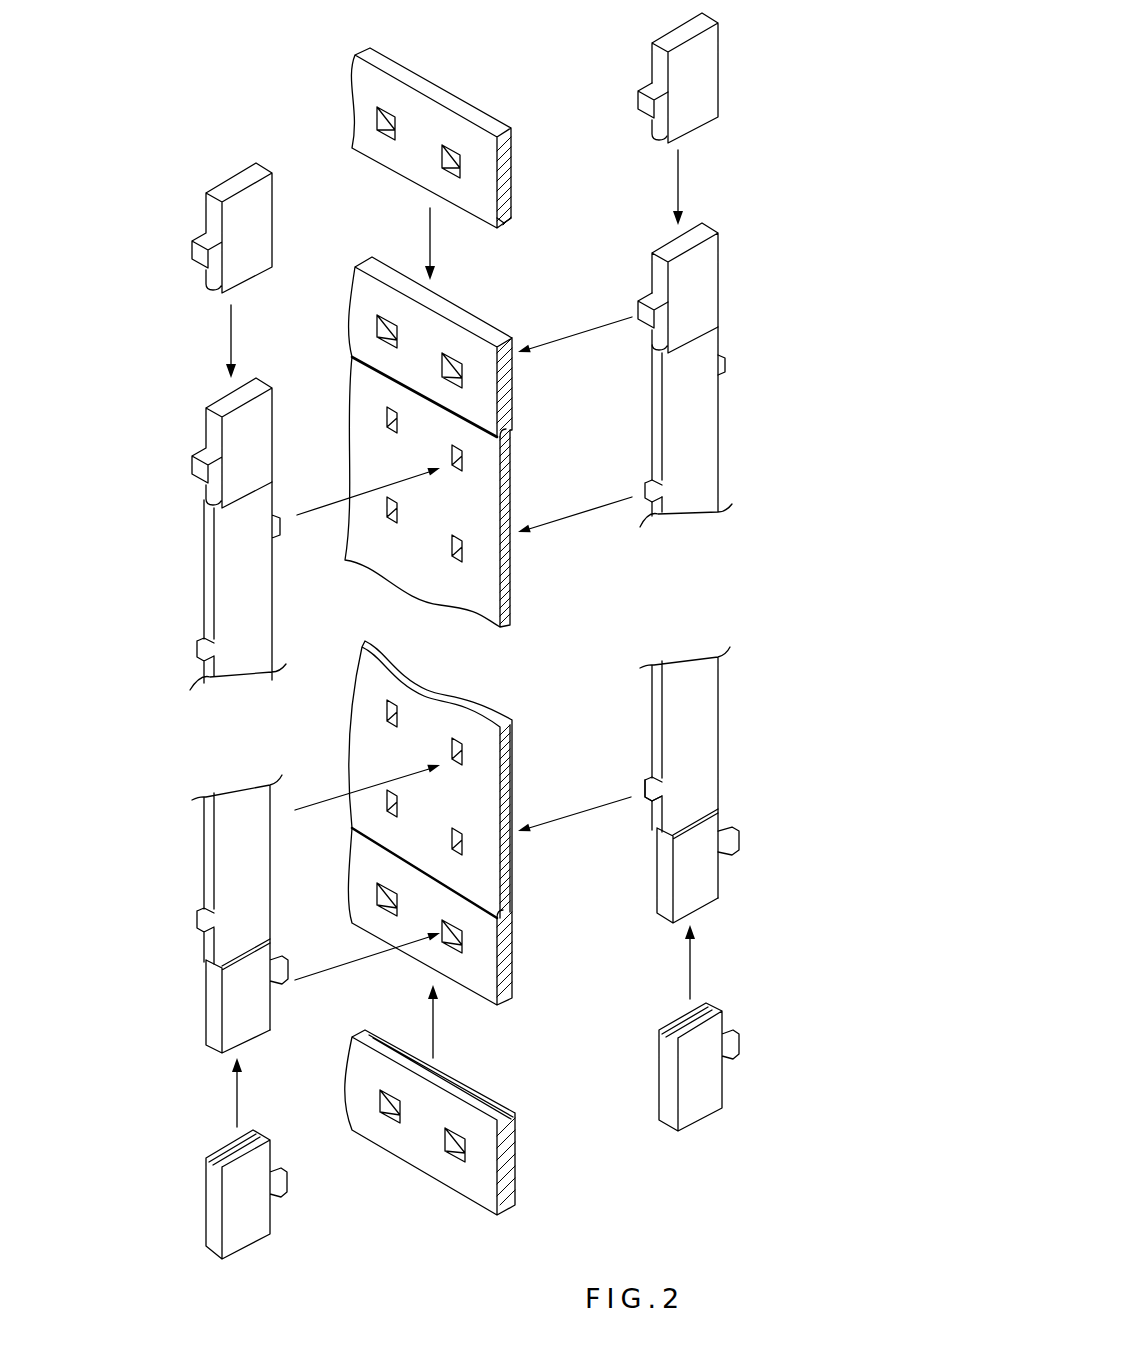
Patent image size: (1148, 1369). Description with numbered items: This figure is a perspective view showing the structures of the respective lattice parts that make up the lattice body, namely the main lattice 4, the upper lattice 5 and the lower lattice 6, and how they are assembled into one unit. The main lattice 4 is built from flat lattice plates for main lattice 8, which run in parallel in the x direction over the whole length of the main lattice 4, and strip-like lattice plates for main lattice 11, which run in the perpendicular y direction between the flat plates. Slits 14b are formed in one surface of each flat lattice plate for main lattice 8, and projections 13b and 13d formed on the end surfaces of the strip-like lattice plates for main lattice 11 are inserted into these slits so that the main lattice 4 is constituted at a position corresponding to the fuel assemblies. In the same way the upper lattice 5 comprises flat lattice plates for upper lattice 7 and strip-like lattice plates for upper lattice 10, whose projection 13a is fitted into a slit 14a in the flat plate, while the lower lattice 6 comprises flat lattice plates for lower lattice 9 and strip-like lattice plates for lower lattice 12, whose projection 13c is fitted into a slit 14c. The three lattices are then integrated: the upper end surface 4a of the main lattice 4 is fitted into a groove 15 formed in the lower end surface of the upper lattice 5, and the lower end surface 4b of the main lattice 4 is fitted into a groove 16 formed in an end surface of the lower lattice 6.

The main lattice 4 is at (656, 570).
The upper end surface of the main lattice 4a is at (657, 332).
The lower end surface of the main lattice 4b is at (660, 832).
The upper lattice 5 is at (653, 570).
The lower lattice 6 is at (673, 858).
The flat lattice plate for upper lattice 7 is at (444, 118).
The flat lattice plate for main lattice 8 is at (463, 631).
The flat lattice plate for lower lattice 9 is at (476, 1095).
The strip-like lattice plate for upper lattice 10 is at (669, 90).
The strip-like lattice plate for main lattice 11 is at (702, 612).
The strip-like lattice plate for lower lattice 12 is at (695, 1110).
The projection 13a is at (640, 105).
The projection 13b is at (650, 478).
The projection 13c is at (740, 845).
The projection 13d is at (725, 365).
The slit 14a is at (453, 147).
The slit 14b is at (463, 460).
The slit 14c is at (455, 945).
The groove 15 is at (500, 218).
The groove 16 is at (485, 1108).